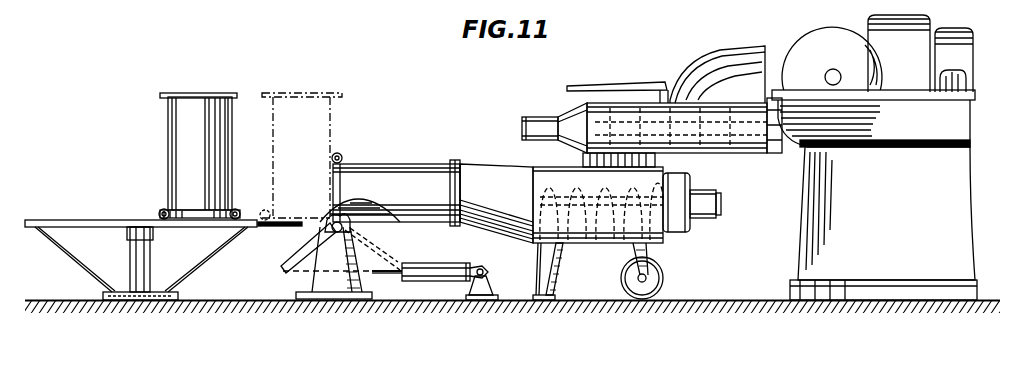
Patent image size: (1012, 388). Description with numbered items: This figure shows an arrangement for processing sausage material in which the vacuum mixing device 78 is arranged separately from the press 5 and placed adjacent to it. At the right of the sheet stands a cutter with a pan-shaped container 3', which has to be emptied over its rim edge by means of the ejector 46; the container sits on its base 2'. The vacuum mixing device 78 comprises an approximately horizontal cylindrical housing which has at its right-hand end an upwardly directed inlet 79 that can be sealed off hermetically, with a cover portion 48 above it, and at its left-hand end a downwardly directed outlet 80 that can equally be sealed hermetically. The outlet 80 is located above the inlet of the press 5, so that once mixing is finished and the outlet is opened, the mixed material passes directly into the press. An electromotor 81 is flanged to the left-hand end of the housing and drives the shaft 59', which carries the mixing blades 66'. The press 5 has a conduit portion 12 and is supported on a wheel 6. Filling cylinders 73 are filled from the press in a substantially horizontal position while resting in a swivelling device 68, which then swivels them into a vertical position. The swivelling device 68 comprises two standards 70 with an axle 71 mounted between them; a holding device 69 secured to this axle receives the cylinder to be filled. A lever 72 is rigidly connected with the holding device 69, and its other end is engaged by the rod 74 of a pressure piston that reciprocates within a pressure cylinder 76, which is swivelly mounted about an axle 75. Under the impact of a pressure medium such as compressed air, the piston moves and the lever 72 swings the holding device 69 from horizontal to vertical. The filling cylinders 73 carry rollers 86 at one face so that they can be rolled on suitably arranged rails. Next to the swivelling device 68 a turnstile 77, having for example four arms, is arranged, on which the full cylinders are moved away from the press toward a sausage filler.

The base 2' is at (894, 223).
The pan-shaped container 3' is at (885, 118).
The press 5 is at (584, 243).
The wheel 6 is at (613, 243).
The conduit 12 is at (494, 232).
The ejector 46 is at (812, 37).
The cover plate 48 is at (712, 56).
The shaft 59' is at (678, 141).
The mixing blades 66' is at (617, 77).
The swivelling device 68 is at (360, 233).
The holding device 69 is at (365, 208).
The standards 70 is at (323, 293).
The axle 71 is at (331, 221).
The lever 72 is at (306, 246).
The filling cylinders 73 is at (173, 149).
The rod 74 is at (378, 274).
The axle 75 is at (489, 276).
The pressure cylinder 76 is at (450, 258).
The turnstile 77 is at (88, 221).
The vacuum mixing device 78 is at (769, 148).
The inlet 79 is at (680, 78).
The outlet 80 is at (583, 159).
The electromotor 81 is at (532, 120).
The rollers 86 is at (262, 211).